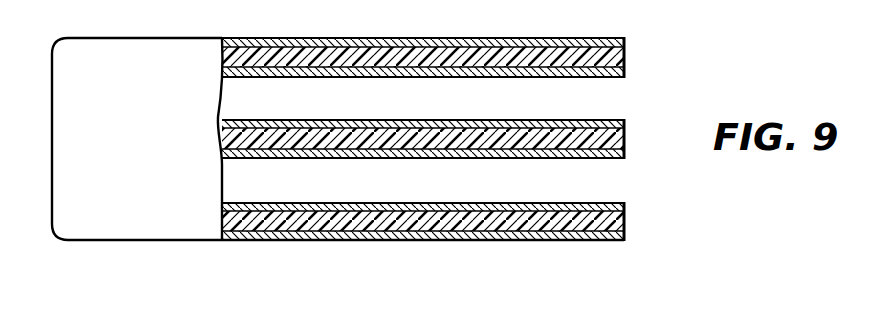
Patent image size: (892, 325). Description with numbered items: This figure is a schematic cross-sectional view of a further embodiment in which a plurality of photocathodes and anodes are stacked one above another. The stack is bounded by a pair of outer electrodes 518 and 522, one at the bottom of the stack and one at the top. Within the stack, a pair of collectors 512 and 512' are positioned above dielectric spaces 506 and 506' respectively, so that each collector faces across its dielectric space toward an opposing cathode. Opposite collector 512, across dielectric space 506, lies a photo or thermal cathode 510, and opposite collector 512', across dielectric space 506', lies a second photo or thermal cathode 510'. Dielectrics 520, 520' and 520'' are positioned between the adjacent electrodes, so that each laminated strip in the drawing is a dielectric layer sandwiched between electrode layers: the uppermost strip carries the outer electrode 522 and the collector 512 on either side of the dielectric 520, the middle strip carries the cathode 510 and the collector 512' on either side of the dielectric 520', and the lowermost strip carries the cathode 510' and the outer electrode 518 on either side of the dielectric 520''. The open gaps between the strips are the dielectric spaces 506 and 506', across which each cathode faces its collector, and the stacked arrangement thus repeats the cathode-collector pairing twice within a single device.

The dielectric 520 is at (455, 44).
The outer electrode 522 is at (605, 38).
The collector 512 is at (455, 64).
The dielectric space 506 is at (460, 98).
The photo or thermal cathode 510 is at (423, 111).
The dielectric 520' is at (453, 138).
The collector 512' is at (423, 165).
The dielectric space 506' is at (462, 180).
The photo or thermal cathode 510' is at (423, 193).
The dielectric 520'' is at (454, 223).
The outer electrode 518 is at (574, 241).